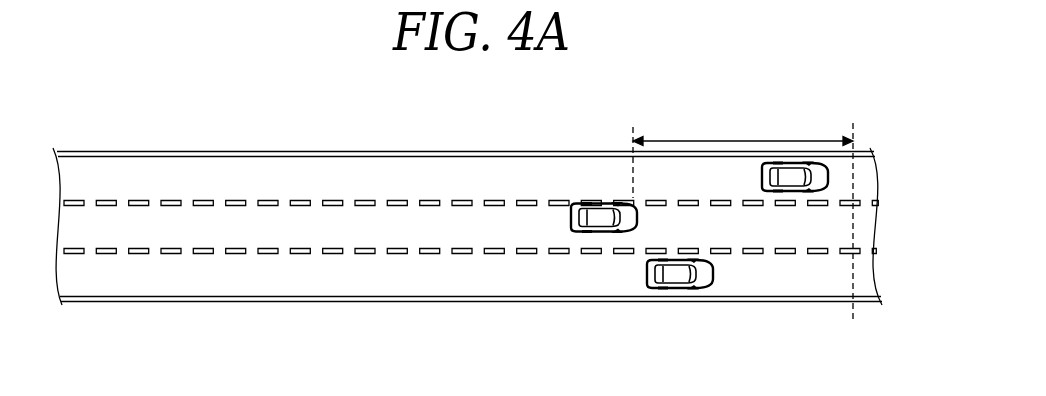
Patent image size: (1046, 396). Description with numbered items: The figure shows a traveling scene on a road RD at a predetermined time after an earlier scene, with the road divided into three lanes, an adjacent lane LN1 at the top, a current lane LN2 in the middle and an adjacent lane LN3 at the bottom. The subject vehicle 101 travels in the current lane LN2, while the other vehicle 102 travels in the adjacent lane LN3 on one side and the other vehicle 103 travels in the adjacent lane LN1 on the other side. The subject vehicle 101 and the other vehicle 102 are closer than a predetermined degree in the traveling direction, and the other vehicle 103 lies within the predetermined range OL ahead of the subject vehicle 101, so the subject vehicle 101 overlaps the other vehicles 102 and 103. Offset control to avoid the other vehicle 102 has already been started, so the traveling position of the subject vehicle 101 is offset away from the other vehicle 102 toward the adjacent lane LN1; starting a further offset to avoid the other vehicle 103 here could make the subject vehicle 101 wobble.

The road RD is at (501, 195).
The adjacent lane LN1 is at (858, 180).
The current lane LN2 is at (858, 228).
The adjacent lane LN3 is at (858, 283).
The predetermined range OL is at (743, 218).
The subject vehicle 101 is at (600, 233).
The other vehicle 102 is at (672, 290).
The other vehicle 103 is at (797, 193).